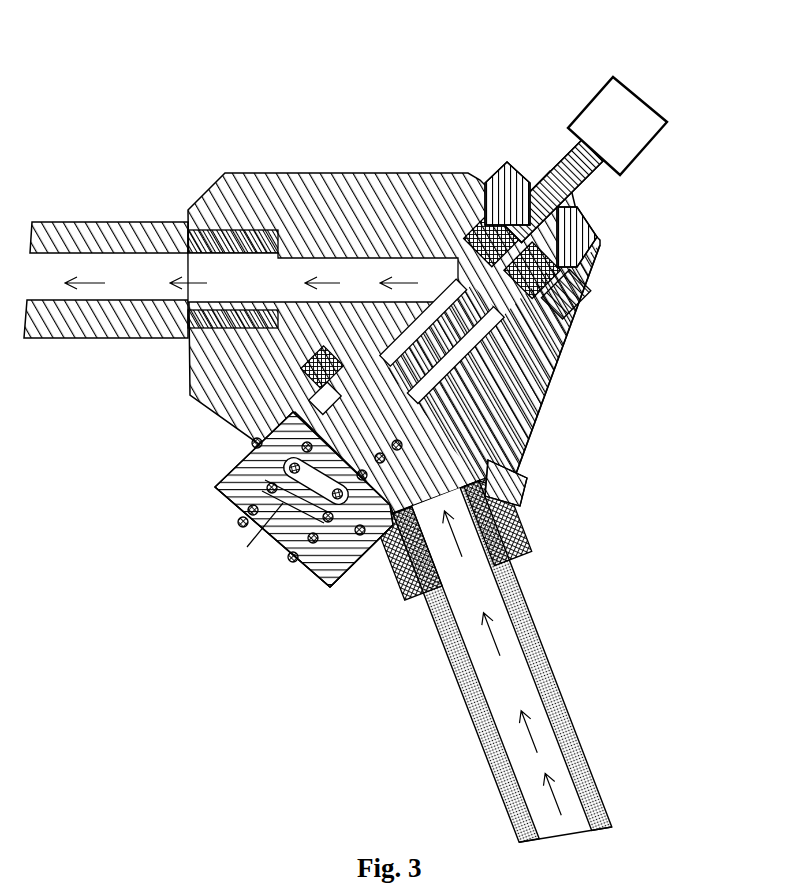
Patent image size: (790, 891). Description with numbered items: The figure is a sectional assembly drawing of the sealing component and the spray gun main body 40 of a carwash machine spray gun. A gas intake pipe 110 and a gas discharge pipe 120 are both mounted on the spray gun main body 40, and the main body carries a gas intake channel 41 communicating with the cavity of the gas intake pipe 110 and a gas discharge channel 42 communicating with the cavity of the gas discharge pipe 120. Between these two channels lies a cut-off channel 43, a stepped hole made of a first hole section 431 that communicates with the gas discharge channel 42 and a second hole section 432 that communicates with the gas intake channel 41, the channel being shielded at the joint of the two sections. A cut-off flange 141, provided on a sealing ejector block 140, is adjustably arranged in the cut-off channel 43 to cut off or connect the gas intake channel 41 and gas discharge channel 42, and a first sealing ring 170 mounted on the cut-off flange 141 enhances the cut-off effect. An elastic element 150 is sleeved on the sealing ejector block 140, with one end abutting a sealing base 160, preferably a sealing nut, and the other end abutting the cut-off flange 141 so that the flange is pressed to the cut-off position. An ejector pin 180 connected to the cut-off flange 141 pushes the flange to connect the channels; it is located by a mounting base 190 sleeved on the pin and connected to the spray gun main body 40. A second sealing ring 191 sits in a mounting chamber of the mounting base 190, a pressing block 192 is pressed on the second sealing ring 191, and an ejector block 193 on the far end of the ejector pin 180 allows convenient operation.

The spray gun main body 40 is at (420, 173).
The gas intake channel 41 is at (513, 510).
The gas discharge channel 42 is at (330, 275).
The cut-off channel 43 is at (553, 377).
The gas intake pipe 110 is at (560, 687).
The gas discharge pipe 120 is at (160, 222).
The sealing ejector block 140 is at (283, 503).
The cut-off flange 141 is at (328, 377).
The elastic element 150 is at (233, 435).
The sealing base 160 is at (330, 585).
The first sealing ring 170 is at (513, 460).
The ejector pin 180 is at (563, 167).
The mounting base 190 is at (588, 220).
The second sealing ring 191 is at (577, 305).
The pressing block 192 is at (583, 267).
The ejector block 193 is at (613, 120).
The first hole section 431 is at (398, 267).
The second hole section 432 is at (322, 407).